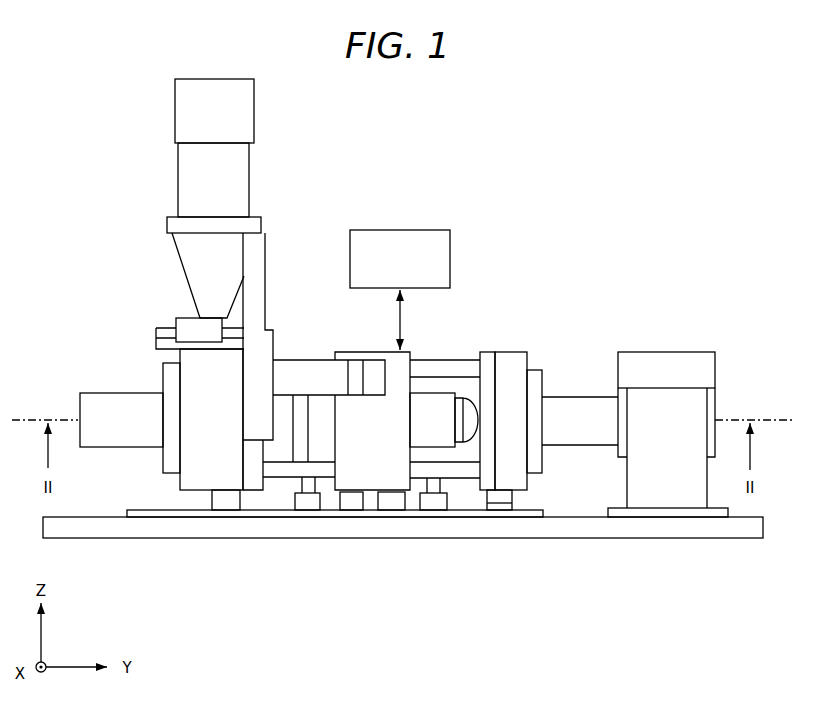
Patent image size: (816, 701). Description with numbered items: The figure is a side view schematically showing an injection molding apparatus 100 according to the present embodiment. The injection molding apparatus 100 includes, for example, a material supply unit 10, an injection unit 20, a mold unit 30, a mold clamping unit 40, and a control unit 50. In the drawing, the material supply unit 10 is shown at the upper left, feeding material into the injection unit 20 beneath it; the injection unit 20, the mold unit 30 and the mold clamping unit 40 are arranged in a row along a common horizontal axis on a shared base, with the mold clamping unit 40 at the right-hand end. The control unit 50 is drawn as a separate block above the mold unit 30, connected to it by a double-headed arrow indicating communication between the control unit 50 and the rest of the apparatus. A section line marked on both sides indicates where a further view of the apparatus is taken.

The material supply unit 10 is at (157, 212).
The injection unit 20 is at (127, 373).
The mold unit 30 is at (452, 341).
The mold clamping unit 40 is at (687, 342).
The control unit 50 is at (400, 252).
The injection molding apparatus 100 is at (642, 295).